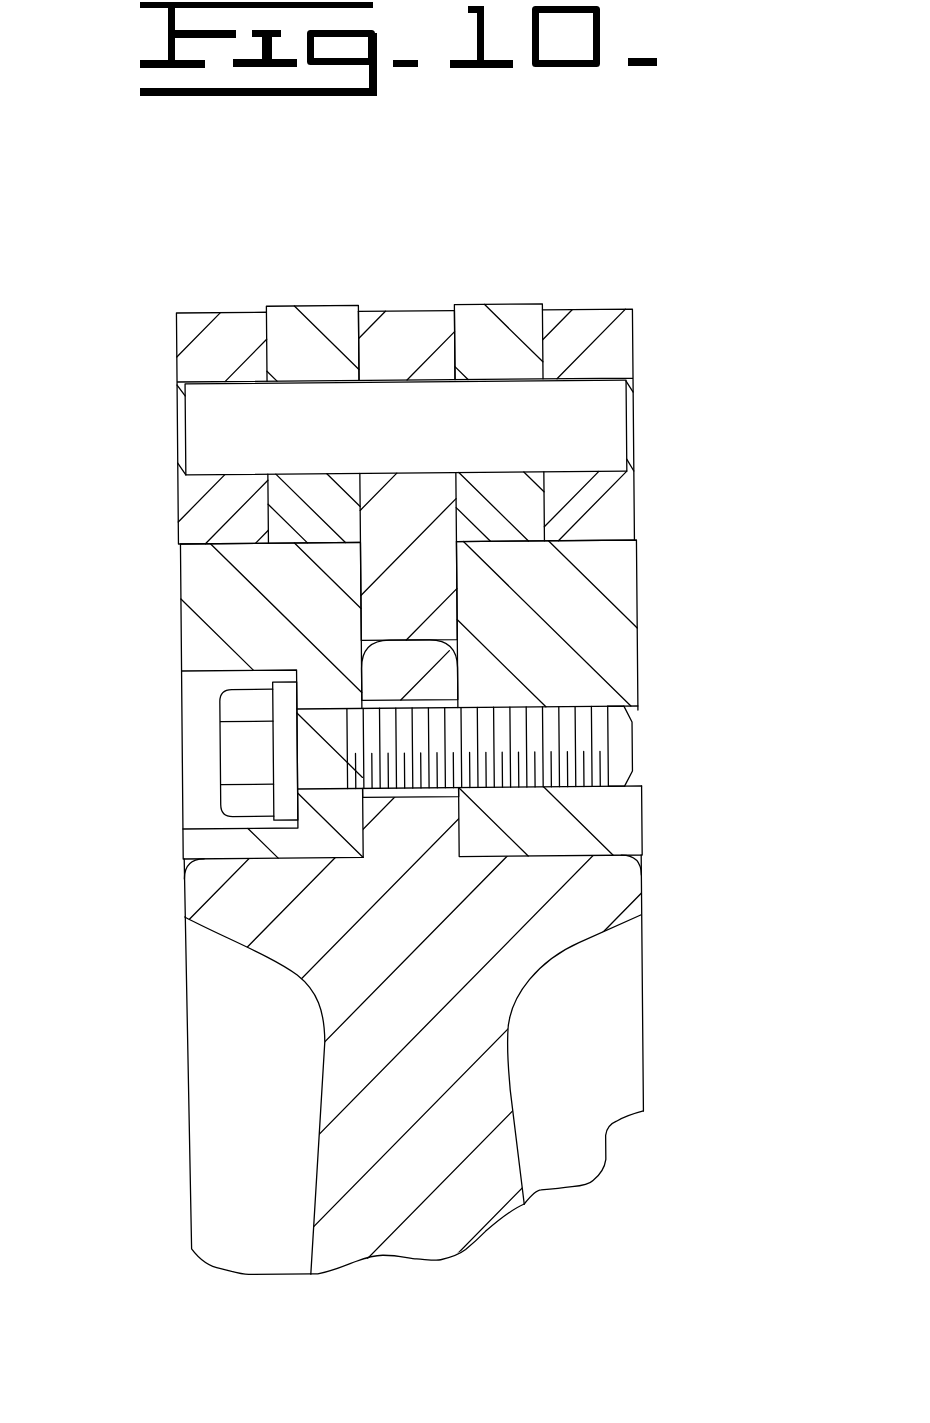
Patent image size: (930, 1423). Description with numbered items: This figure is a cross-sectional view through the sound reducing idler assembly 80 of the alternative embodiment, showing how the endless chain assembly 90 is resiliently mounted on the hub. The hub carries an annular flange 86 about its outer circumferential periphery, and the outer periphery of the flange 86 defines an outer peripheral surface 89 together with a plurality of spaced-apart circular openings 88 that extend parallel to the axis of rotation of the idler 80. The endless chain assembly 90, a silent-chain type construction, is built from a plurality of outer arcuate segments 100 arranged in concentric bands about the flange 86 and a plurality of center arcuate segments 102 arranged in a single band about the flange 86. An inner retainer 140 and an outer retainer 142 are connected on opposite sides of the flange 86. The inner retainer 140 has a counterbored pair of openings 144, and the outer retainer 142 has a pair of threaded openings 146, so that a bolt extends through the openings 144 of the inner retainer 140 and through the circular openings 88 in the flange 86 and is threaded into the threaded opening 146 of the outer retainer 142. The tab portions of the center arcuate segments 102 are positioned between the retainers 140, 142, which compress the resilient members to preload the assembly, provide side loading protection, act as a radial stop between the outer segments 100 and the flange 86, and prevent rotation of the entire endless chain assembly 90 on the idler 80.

The sound reducing idler assembly 80 is at (650, 986).
The annular flange 86 is at (462, 842).
The circular openings 88 is at (420, 702).
The outer peripheral surface 89 is at (398, 641).
The endless chain assembly 90 is at (656, 329).
The outer arcuate segments 100 is at (292, 304).
The center arcuate segments 102 is at (429, 310).
The inner retainer 140 is at (196, 573).
The outer retainer 142 is at (614, 570).
The counterbored openings 144 is at (212, 828).
The threaded openings 146 is at (638, 777).